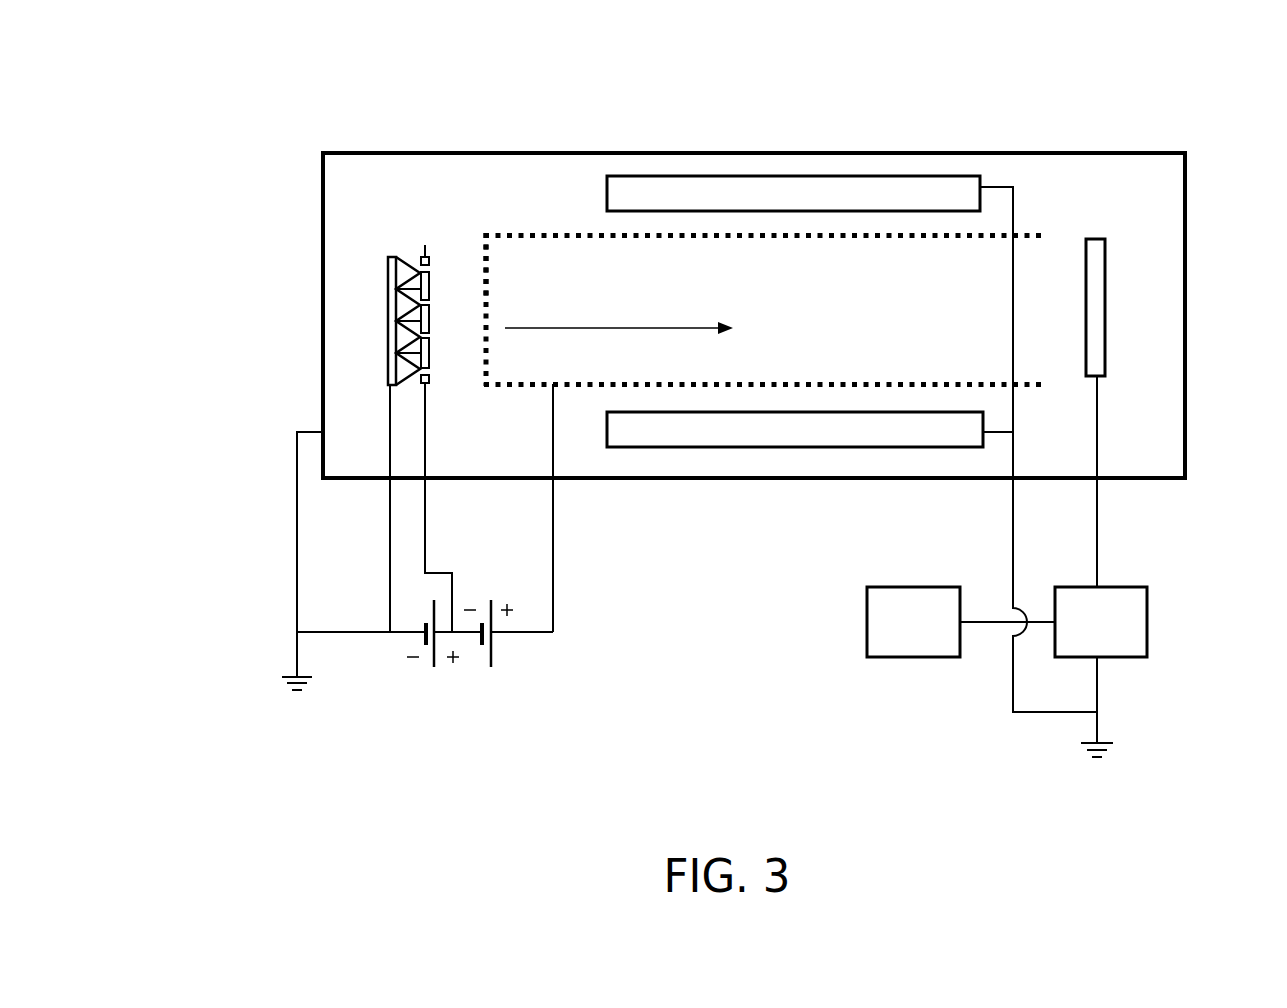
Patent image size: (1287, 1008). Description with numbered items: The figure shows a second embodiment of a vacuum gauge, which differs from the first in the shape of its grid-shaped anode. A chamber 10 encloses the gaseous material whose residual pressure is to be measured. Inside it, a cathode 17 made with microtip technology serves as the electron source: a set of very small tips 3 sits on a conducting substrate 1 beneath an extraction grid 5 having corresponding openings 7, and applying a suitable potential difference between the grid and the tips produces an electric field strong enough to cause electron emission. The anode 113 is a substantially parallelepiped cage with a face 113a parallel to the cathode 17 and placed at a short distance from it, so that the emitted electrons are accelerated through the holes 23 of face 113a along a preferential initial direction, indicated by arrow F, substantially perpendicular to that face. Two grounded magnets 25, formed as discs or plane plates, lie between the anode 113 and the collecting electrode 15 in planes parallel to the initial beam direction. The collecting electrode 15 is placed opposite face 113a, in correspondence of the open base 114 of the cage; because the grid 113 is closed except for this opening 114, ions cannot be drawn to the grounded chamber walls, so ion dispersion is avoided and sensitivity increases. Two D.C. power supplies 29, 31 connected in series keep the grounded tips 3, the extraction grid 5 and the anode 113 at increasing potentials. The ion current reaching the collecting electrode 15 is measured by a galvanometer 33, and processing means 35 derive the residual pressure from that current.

The conducting substrate 1 is at (393, 257).
The tips 3 is at (392, 305).
The extraction grid 5 is at (425, 257).
The openings 7 is at (431, 266).
The chamber 10 is at (963, 152).
The collecting electrode 15 is at (1107, 292).
The cathode 17 is at (355, 357).
The holes 23 is at (484, 358).
The magnets 25 is at (792, 177).
The first power supply 29 is at (449, 690).
The second power supply 31 is at (516, 655).
The galvanometer 33 is at (1084, 637).
The means for processing the analogue signal 35 is at (896, 637).
The anode 113 is at (690, 285).
The face 113a is at (508, 292).
The open base 114 is at (1047, 317).